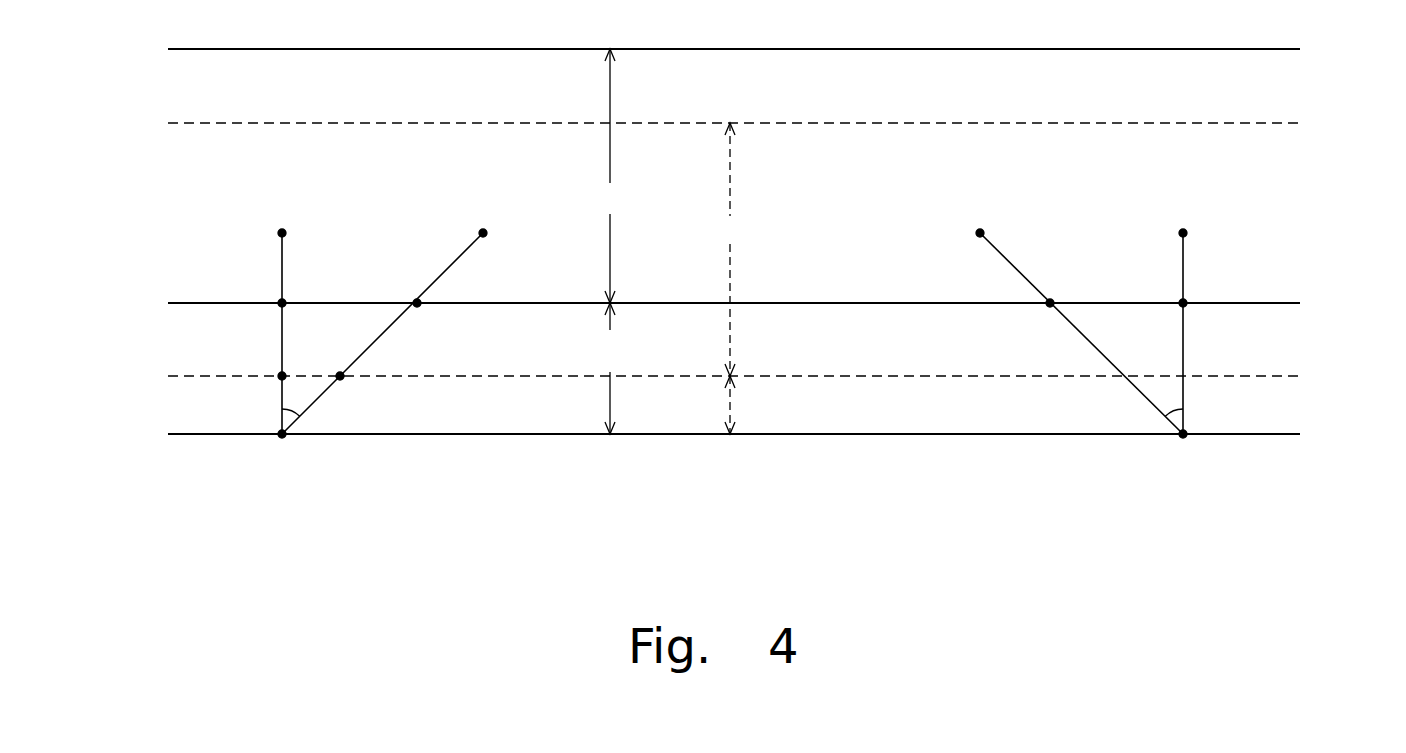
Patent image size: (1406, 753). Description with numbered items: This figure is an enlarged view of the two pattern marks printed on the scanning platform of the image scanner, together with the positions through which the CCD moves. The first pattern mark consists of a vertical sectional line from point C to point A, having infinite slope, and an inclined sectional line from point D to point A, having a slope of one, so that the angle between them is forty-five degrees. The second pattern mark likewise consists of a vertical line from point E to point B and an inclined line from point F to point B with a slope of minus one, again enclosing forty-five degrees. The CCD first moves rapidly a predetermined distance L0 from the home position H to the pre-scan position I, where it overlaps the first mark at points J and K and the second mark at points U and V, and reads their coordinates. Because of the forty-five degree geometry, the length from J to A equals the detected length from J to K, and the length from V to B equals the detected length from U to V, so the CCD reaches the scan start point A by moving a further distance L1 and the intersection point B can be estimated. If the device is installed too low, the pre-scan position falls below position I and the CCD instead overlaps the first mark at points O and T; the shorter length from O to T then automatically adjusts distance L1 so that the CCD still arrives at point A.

The home position H is at (736, 86).
The pre-scan position I is at (735, 361).
The point C is at (285, 312).
The point D is at (397, 312).
The point E is at (1185, 312).
The point F is at (1074, 312).
The point J(x1,y1) J is at (281, 302).
The point K(x2,y1) K is at (416, 302).
The point O(x1,y2) O is at (281, 377).
The point A(x5,y5) A is at (282, 435).
The point T(x7,y7) T is at (341, 377).
The point U(x3,y1) U is at (1051, 302).
The point V(x4,y1) V is at (1184, 302).
The point B(x6,y6) B is at (1184, 435).
The predetermined distance L0 is at (671, 212).
The distance L1 is at (666, 368).